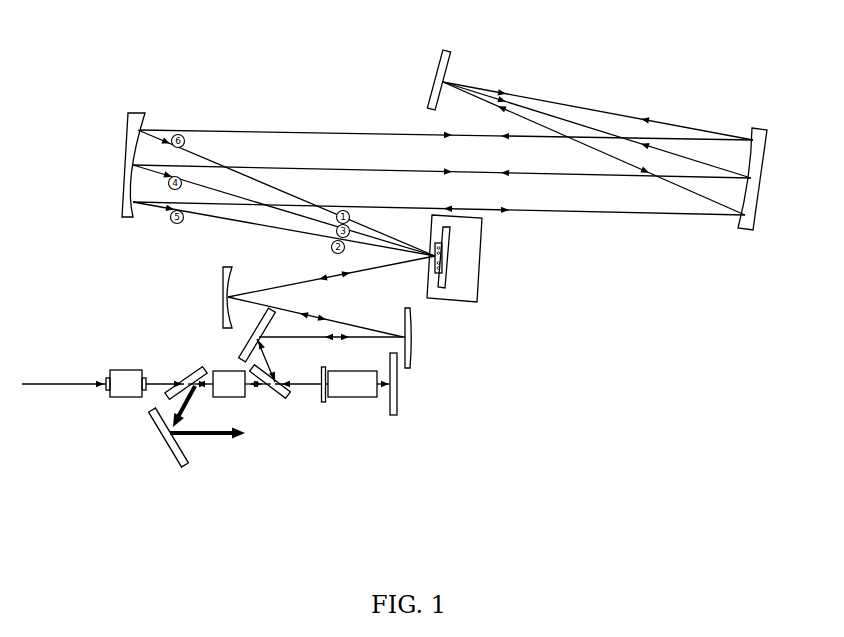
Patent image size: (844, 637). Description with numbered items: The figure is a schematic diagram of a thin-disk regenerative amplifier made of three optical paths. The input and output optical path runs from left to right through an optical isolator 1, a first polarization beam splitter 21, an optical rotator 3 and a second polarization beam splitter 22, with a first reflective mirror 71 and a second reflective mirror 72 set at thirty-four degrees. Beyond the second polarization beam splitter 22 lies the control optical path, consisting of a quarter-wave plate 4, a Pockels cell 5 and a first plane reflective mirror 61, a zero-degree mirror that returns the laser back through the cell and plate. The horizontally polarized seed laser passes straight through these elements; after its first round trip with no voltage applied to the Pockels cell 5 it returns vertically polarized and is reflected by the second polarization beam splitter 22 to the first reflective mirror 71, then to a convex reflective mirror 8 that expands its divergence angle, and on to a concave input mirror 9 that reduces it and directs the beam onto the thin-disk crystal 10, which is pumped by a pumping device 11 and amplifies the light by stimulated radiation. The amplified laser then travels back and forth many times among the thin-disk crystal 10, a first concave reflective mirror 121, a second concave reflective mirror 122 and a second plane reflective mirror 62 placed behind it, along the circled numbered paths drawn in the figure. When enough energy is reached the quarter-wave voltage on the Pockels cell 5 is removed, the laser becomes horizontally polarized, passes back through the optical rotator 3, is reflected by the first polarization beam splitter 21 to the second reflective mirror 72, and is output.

The optical isolator 1 is at (120, 367).
The first polarization beam splitter 21 is at (176, 368).
The second polarization beam splitter 22 is at (281, 394).
The optical rotator 3 is at (234, 397).
The quarter-wave plate 4 is at (334, 395).
The Pockels cell 5 is at (358, 397).
The first plane reflective mirror 61 is at (412, 399).
The second plane reflective mirror 62 is at (456, 62).
The first reflective mirror 71 is at (240, 335).
The second reflective mirror 72 is at (179, 447).
The convex reflective mirror 8 is at (420, 356).
The input mirror 9 is at (215, 280).
The thin-disk crystal 10 is at (454, 276).
The pumping device 11 is at (465, 270).
The first concave reflective mirror 121 is at (113, 146).
The second concave reflective mirror 122 is at (773, 152).